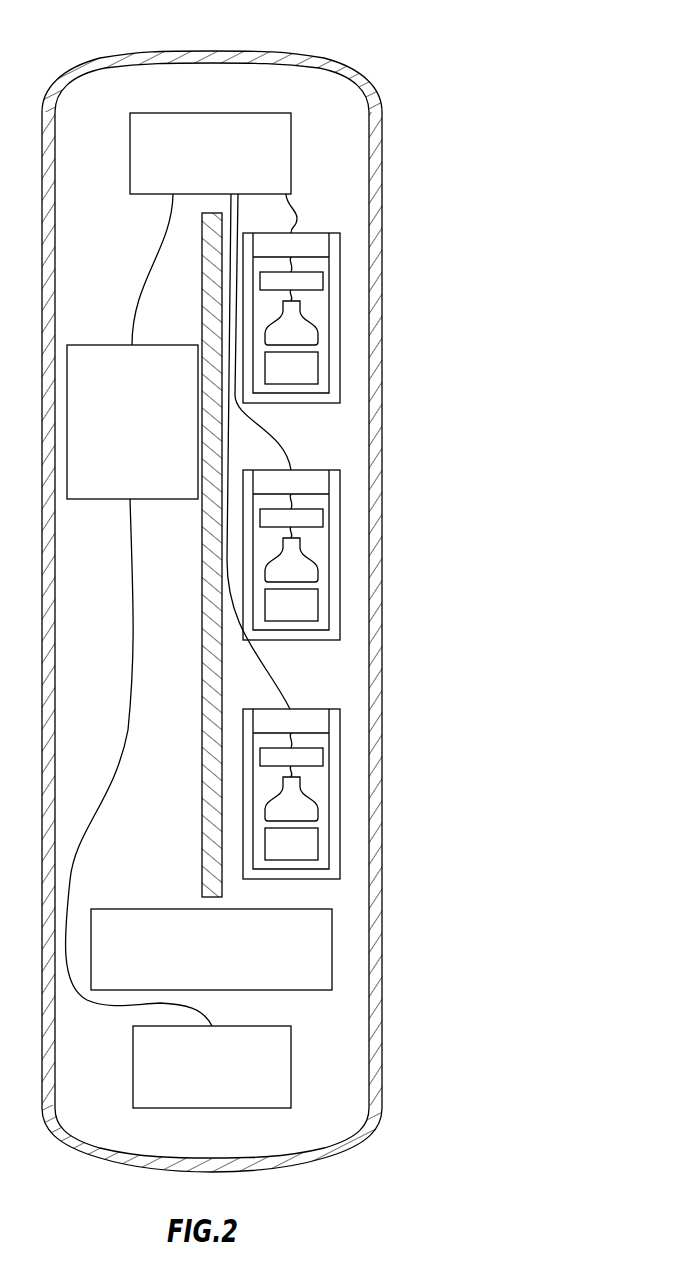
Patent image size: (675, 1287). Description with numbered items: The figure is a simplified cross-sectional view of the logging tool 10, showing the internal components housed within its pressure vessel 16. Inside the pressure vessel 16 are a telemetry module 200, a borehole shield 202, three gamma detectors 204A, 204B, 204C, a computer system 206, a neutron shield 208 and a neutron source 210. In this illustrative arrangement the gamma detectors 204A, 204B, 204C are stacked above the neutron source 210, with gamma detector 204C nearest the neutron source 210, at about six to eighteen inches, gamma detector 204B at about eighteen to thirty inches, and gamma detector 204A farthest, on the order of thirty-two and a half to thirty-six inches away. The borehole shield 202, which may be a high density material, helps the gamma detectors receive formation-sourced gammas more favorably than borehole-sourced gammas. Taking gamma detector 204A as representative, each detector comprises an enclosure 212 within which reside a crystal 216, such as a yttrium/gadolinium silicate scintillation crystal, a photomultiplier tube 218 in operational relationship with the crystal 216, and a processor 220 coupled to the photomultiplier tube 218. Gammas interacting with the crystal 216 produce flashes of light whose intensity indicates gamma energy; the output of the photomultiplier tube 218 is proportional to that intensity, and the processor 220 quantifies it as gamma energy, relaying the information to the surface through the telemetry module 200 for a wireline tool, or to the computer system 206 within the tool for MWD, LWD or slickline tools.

The logging tool 10 is at (307, 593).
The pressure vessel 16 is at (382, 237).
The telemetry module 200 is at (150, 194).
The borehole shield 202 is at (202, 325).
The gamma detector 204A is at (371, 318).
The gamma detector 204B is at (340, 553).
The gamma detector 204C is at (340, 790).
The computer system 206 is at (113, 463).
The neutron shield 208 is at (332, 930).
The neutron source 210 is at (291, 1060).
The enclosure 212 is at (336, 287).
The crystal 216 is at (308, 371).
The photomultiplier tube 218 is at (318, 337).
The processor 220 is at (260, 275).